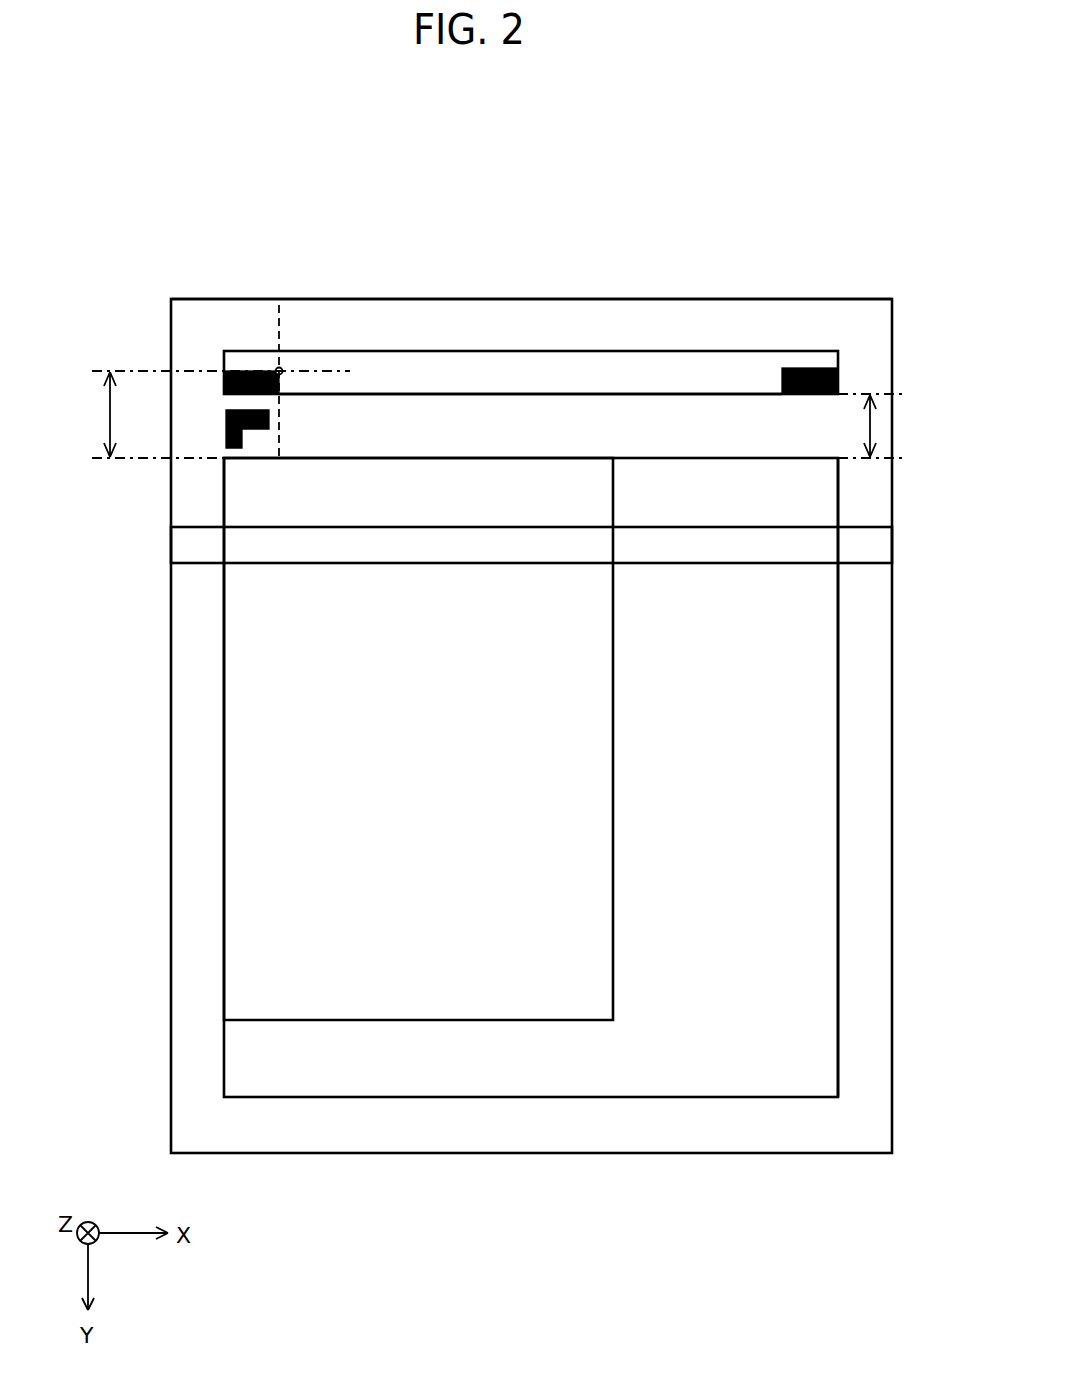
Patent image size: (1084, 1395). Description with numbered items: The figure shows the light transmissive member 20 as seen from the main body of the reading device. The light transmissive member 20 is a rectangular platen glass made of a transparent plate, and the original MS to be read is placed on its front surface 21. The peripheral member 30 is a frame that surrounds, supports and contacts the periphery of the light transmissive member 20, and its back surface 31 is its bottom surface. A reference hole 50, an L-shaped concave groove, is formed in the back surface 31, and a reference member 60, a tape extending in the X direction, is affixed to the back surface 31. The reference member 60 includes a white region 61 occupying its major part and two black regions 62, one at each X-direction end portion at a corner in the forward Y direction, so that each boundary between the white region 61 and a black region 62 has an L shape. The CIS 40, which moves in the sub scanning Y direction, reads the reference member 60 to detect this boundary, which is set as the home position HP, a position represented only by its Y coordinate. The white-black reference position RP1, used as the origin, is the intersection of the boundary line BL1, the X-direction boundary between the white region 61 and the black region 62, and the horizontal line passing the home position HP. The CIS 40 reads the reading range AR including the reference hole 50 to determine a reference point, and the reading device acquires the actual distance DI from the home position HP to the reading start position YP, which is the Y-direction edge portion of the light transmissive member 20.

The light transmissive member 20 is at (838, 698).
The front surface 21 is at (818, 815).
The peripheral member 30 is at (893, 423).
The back surface 31 is at (737, 312).
The CIS 40 is at (786, 563).
The reference hole 50 is at (225, 425).
The reference member 60 is at (630, 349).
The white region 61 is at (628, 396).
The black region 62 is at (256, 370).
The original MS is at (250, 815).
The home position HP is at (200, 379).
The reading start position YP is at (475, 435).
The actual distance DI is at (96, 414).
The reading range AR is at (854, 426).
The white-black reference position RP1 is at (283, 366).
The boundary line BL1 is at (283, 442).